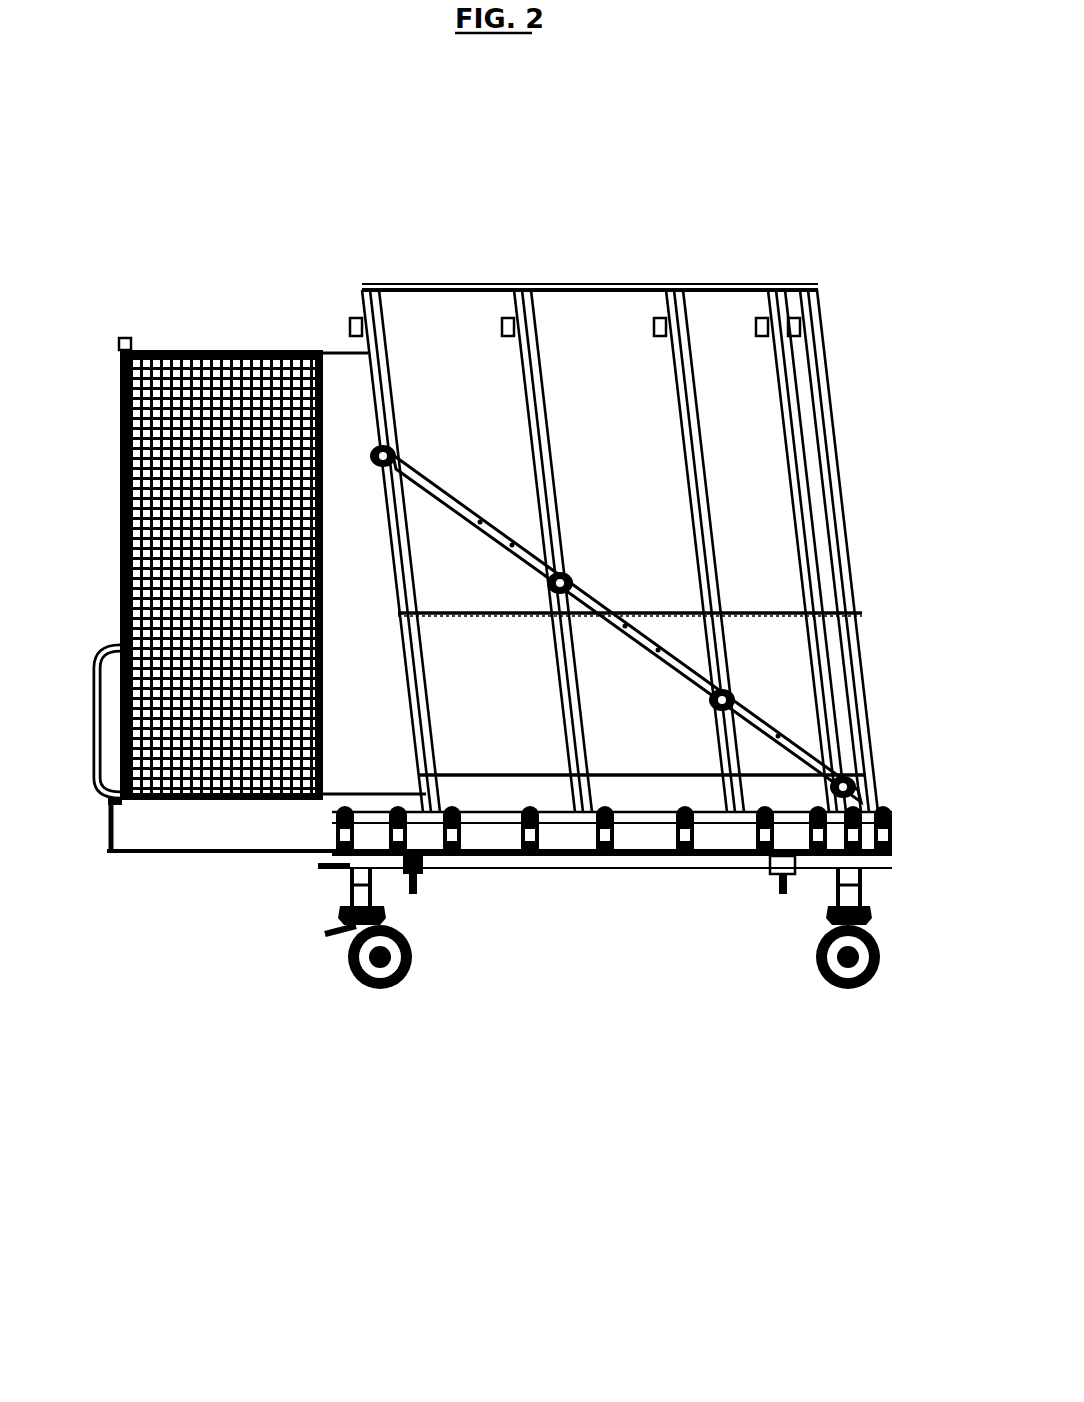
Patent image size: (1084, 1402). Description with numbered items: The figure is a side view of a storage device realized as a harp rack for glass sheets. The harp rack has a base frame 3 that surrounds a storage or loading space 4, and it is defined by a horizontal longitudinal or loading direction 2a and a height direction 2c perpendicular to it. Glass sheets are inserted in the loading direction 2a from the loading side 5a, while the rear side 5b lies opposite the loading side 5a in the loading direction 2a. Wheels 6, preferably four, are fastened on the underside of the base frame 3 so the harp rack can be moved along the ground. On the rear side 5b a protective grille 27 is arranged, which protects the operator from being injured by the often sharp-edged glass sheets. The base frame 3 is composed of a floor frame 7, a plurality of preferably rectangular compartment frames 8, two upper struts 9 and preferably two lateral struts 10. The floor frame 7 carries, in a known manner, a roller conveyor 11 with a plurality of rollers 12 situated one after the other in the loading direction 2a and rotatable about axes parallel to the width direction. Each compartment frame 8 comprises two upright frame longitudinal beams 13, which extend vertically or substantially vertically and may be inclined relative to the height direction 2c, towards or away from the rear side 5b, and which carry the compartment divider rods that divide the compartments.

The longitudinal direction or loading direction 2a is at (353, 1281).
The height direction 2c is at (163, 1222).
The base frame 3 is at (573, 287).
The storage or loading space 4 is at (650, 710).
The loading side 5a is at (862, 552).
The rear side 5b is at (108, 527).
The wheels 6 is at (858, 975).
The floor frame 7 is at (628, 860).
The compartment frames 8 is at (688, 375).
The upper struts 9 is at (470, 282).
The lateral struts 10 is at (445, 510).
The roller conveyor 11 is at (533, 800).
The rollers 12 is at (608, 818).
The frame longitudinal beams 13 is at (779, 305).
The protective grille 27 is at (150, 415).